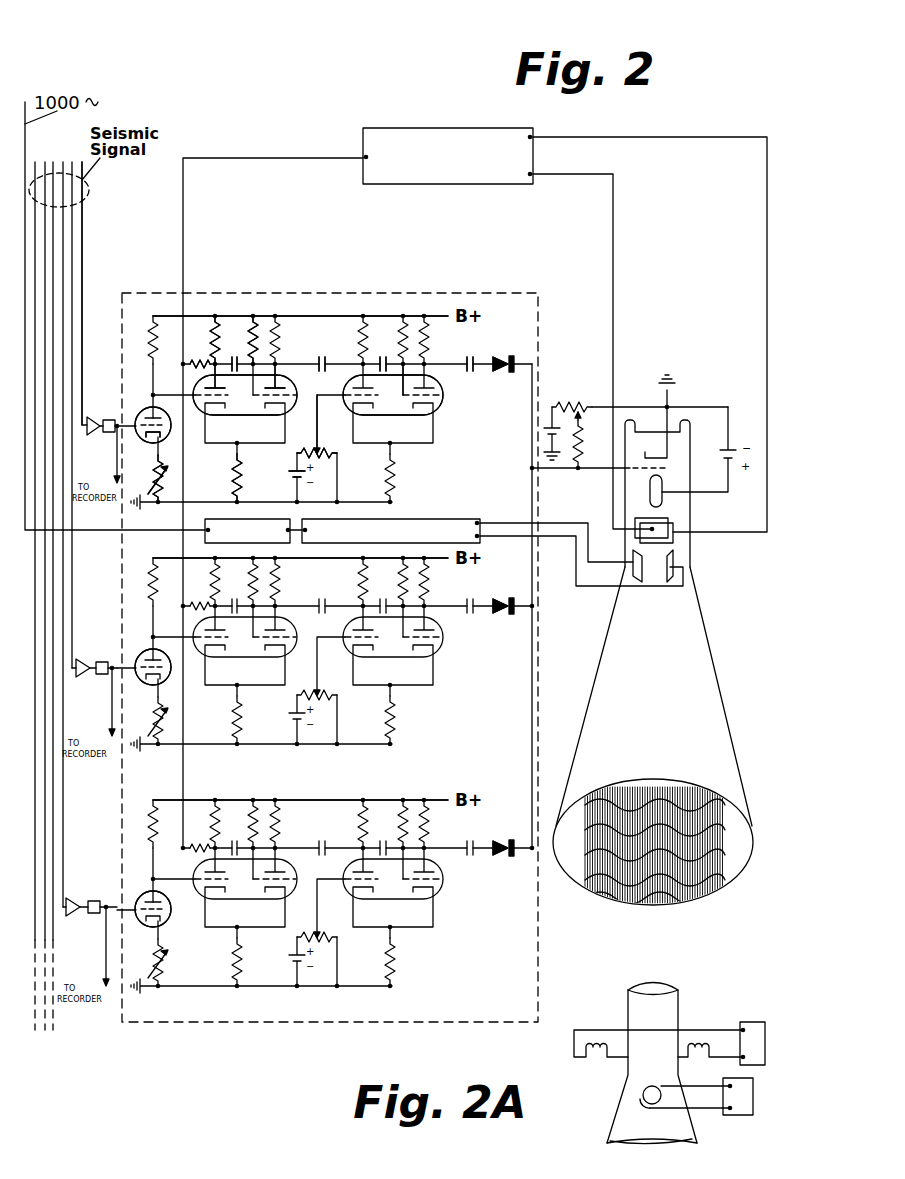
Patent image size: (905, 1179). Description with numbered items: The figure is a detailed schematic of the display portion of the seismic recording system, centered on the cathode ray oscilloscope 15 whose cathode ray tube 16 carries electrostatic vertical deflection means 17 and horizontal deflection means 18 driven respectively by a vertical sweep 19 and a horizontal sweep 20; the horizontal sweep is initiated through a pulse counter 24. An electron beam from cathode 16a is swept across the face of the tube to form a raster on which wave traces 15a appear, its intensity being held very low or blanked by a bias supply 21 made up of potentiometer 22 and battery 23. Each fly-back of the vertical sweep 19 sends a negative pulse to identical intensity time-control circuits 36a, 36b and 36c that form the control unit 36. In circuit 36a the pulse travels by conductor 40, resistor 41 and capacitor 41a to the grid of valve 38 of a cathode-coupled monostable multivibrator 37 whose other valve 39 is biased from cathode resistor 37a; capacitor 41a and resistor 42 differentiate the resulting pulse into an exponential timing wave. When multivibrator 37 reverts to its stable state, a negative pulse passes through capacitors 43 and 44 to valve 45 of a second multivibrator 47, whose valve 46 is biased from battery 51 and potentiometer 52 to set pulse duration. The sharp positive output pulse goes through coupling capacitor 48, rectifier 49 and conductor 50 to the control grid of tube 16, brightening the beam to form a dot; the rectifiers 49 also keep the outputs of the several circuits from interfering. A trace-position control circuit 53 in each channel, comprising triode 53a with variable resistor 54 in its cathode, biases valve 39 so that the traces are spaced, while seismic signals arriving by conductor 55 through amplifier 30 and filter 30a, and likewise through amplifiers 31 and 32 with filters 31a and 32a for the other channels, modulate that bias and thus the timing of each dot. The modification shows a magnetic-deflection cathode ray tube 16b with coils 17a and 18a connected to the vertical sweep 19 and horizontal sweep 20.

In FIG. 2, the cathode ray oscilloscope 15 is at (742, 771).
In FIG. 2, the traces on screen 15a is at (702, 899).
In FIG. 2, the cathode ray tube 16 is at (703, 646).
In FIG. 2, the cathode 16a is at (670, 457).
In FIG. 2A, the cathode ray tube 16b is at (610, 1139).
In FIG. 2, the vertical deflection means 17 is at (676, 539).
In FIG. 2A, the coils 17a is at (703, 1043).
In FIG. 2, the horizontal deflection means 18 is at (674, 563).
In FIG. 2A, the coils 18a is at (641, 1097).
In FIG. 2, the vertical sweep circuit 19 is at (394, 128).
In FIG. 2A, the vertical sweep circuit 19 is at (752, 1022).
In FIG. 2, the horizontal sweep circuit 20 is at (472, 519).
In FIG. 2A, the horizontal sweep circuit 20 is at (736, 1112).
In FIG. 2, the bias supply 21 is at (589, 439).
In FIG. 2, the potentiometer 22 is at (578, 406).
In FIG. 2, the battery 23 is at (546, 430).
In FIG. 2, the pulse counter 24 is at (205, 538).
In FIG. 2, the amplifier 30 is at (95, 443).
In FIG. 2, the filter 30a is at (110, 419).
In FIG. 2, the seismic detector 31 is at (79, 686).
In FIG. 2, the amplifier 31a is at (101, 661).
In FIG. 2, the seismic detector 32 is at (73, 931).
In FIG. 2, the amplifier 32a is at (96, 899).
In FIG. 2, the control unit 36 is at (539, 977).
In FIG. 2, the intensity time-control circuit 36a is at (300, 304).
In FIG. 2, the intensity time-control circuit 36b is at (300, 570).
In FIG. 2, the intensity time-control circuit 36c is at (300, 786).
In FIG. 2, the multivibrator 37 is at (245, 406).
In FIG. 2, the cathode resistor 37a is at (241, 484).
In FIG. 2, the electronic valve 38 is at (287, 399).
In FIG. 2, the electronic valve 39 is at (197, 390).
In FIG. 2, the conductor 40 is at (182, 302).
In FIG. 2, the resistor 41 is at (204, 316).
In FIG. 2, the capacitor 41a is at (233, 350).
In FIG. 2, the resistor 42 is at (256, 316).
In FIG. 2, the capacitor 43 is at (322, 358).
In FIG. 2, the capacitor 44 is at (383, 358).
In FIG. 2, the electronic valve 45 is at (436, 396).
In FIG. 2, the electronic valve 46 is at (351, 404).
In FIG. 2, the multivibrator 47 is at (393, 406).
In FIG. 2, the coupling capacitor 48 is at (472, 358).
In FIG. 2, the rectifier 49 is at (516, 356).
In FIG. 2, the conductor 50 is at (530, 465).
In FIG. 2, the battery 51 is at (290, 480).
In FIG. 2, the potentiometer 52 is at (339, 453).
In FIG. 2, the trace-position control circuit 53 is at (147, 661).
In FIG. 2, the triode 53a is at (141, 442).
In FIG. 2, the variable resistor 54 is at (172, 485).
In FIG. 2, the conductor 55 is at (83, 378).